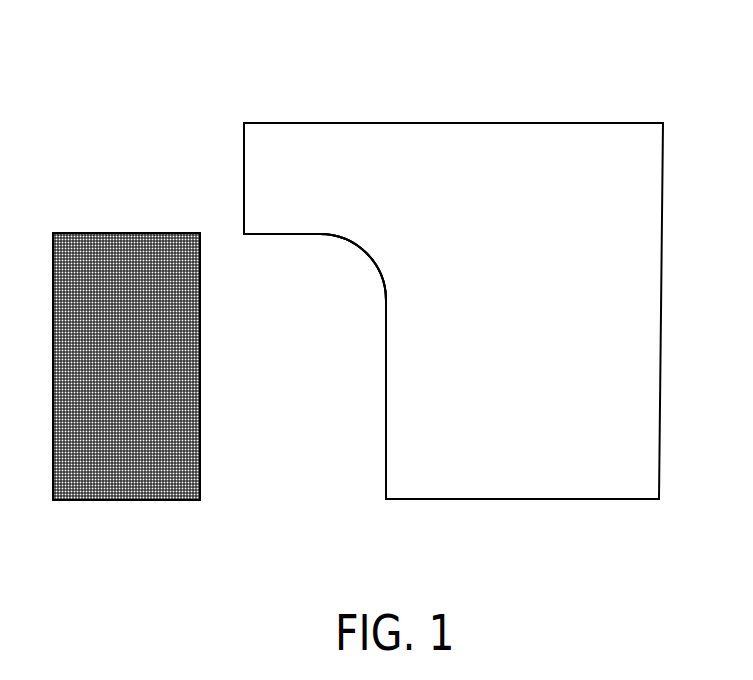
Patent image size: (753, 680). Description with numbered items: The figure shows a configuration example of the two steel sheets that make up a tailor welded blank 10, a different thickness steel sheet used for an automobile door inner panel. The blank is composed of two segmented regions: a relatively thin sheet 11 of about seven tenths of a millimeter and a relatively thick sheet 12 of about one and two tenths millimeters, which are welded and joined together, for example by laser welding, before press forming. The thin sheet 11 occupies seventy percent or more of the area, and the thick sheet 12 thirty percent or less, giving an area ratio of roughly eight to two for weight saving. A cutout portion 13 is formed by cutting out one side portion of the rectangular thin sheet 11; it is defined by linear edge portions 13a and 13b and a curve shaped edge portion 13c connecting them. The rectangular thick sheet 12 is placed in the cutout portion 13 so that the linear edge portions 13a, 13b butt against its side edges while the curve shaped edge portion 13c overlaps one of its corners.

The tailor welded blank 10 is at (603, 93).
The thin sheet 11 is at (455, 124).
The thick sheet 12 is at (118, 500).
The cutout portion 13 is at (308, 351).
The linear edge portion 13a is at (317, 245).
The linear edge portion 13b is at (376, 300).
The curve shaped edge portion 13c is at (317, 246).